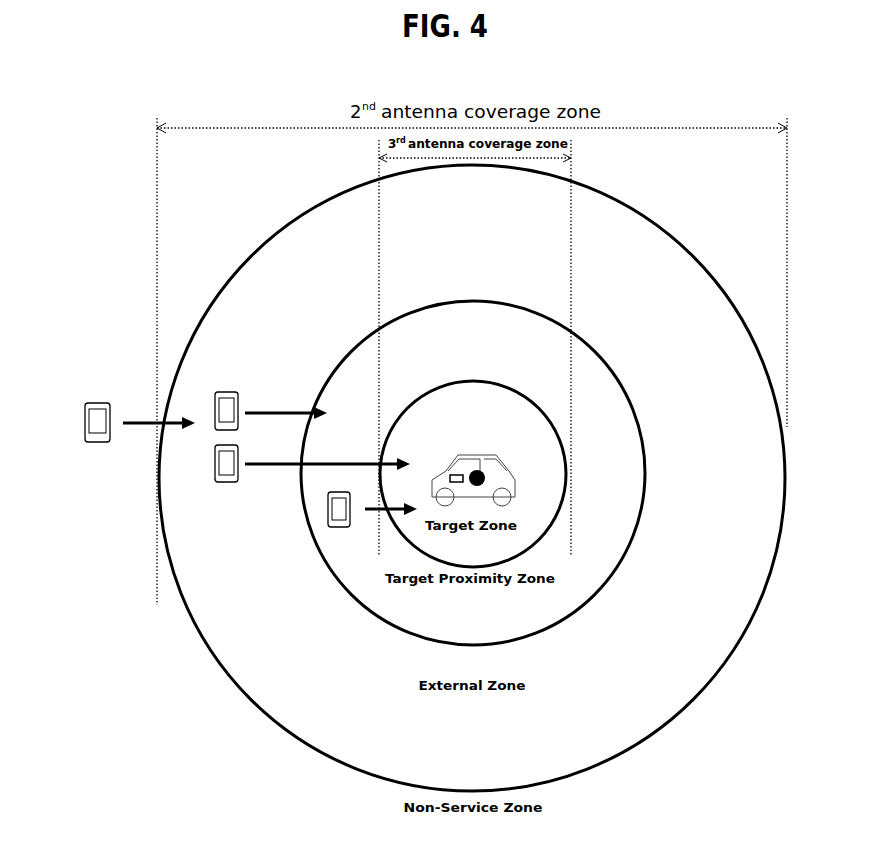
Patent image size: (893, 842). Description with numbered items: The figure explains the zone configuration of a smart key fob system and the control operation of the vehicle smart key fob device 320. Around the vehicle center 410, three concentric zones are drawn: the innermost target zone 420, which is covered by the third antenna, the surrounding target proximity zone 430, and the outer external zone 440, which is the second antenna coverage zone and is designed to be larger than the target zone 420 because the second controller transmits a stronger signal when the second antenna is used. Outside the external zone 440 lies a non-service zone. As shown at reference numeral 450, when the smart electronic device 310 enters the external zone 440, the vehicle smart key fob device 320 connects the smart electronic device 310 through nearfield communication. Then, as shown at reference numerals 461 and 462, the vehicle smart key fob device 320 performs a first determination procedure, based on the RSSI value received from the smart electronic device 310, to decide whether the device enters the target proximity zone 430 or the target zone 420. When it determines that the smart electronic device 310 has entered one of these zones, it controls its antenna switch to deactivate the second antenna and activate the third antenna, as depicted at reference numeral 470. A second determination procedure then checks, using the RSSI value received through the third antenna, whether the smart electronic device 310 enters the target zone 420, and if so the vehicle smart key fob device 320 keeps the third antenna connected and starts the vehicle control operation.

The smart electronic device 310 is at (95, 403).
The vehicle smart key fob device 320 is at (452, 475).
The vehicle center 410 is at (476, 470).
The target zone 420 is at (538, 400).
The target proximity zone 430 is at (648, 440).
The external zone 440 is at (788, 432).
The smart electronic device entering the external zone 450 is at (148, 425).
The first determination procedure step 461 is at (268, 412).
The first determination procedure step 462 is at (277, 466).
The smart electronic device in the target proximity zone 470 is at (383, 512).